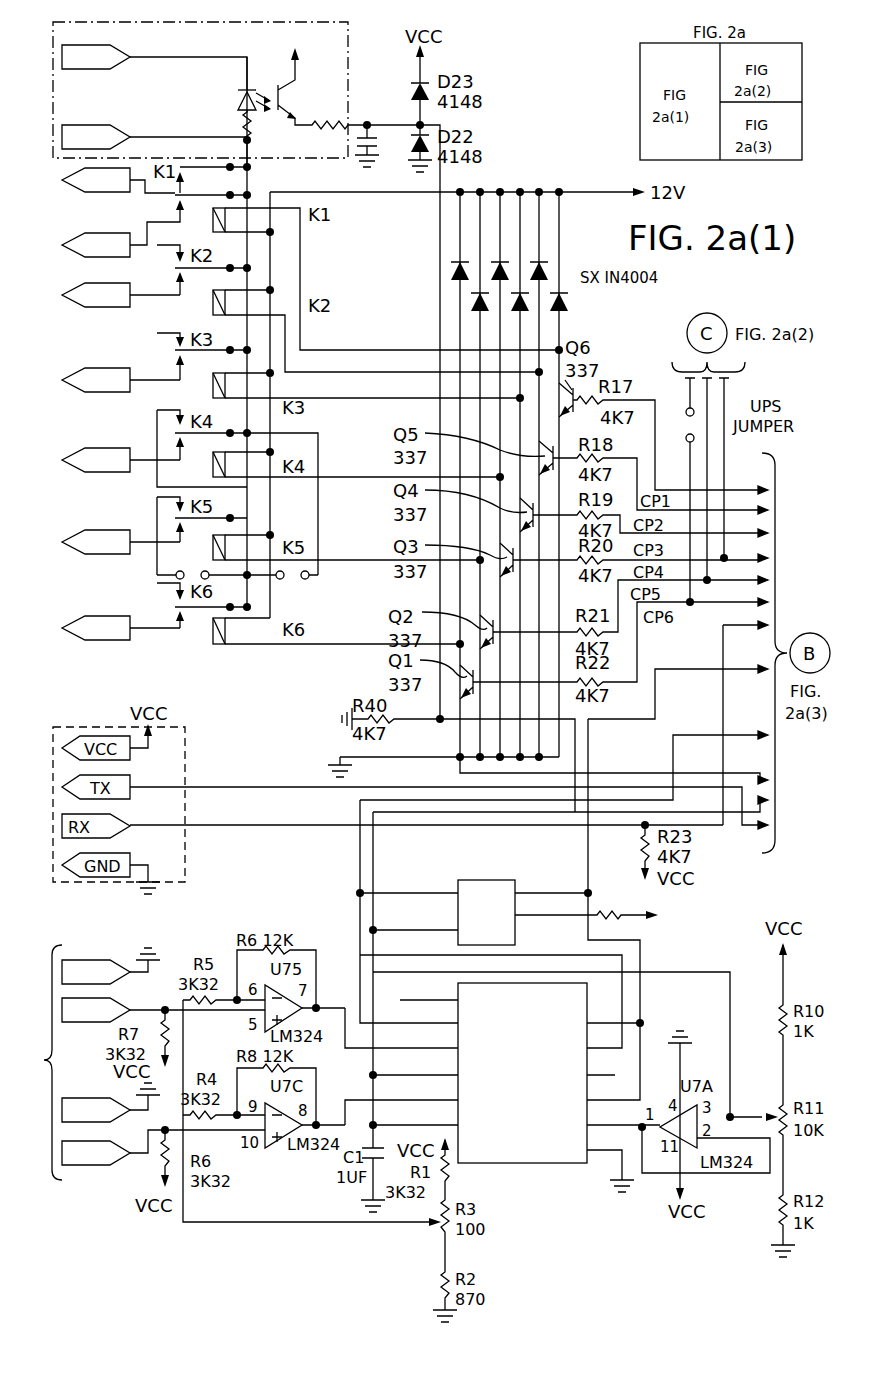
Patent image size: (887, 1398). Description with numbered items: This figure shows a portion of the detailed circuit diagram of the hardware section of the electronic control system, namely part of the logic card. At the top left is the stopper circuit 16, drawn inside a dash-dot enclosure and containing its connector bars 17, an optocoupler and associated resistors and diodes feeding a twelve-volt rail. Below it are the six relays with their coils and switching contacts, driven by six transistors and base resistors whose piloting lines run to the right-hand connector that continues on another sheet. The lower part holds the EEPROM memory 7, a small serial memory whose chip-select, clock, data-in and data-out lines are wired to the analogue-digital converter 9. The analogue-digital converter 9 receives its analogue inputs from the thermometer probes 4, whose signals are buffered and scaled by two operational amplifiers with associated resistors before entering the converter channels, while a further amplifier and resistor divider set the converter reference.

The stopper circuit 16 is at (349, 47).
The connector bars 17 is at (117, 97).
The thermometer probes 4 is at (72, 1062).
The EEPROM memory 7 is at (505, 930).
The analogue-digital converter 9 is at (575, 1165).